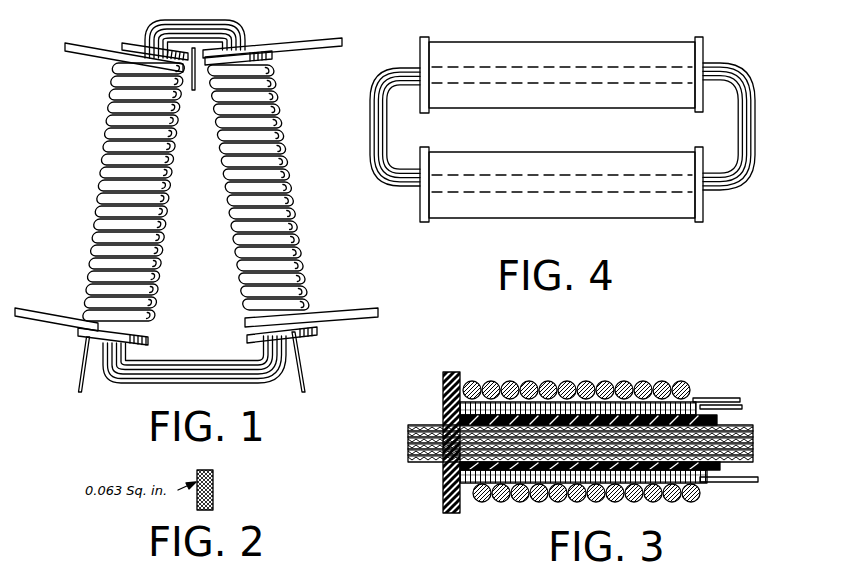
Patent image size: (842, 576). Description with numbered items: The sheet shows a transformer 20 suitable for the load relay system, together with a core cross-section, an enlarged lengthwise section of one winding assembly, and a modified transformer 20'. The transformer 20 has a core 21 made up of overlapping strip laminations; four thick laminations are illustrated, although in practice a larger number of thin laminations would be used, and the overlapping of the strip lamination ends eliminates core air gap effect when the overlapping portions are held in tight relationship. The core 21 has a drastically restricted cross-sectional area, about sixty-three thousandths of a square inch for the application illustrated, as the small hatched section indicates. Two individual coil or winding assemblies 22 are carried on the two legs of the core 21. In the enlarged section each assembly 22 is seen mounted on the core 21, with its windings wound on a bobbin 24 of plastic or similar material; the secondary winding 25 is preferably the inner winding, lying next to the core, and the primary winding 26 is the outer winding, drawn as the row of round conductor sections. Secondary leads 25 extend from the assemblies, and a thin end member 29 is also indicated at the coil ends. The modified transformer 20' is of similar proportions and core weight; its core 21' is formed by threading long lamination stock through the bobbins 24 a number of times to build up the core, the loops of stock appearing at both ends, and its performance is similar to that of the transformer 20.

In FIG. 1, the transformer 20 is at (221, 215).
In FIG. 1, the core 21 is at (190, 211).
In FIG. 2, the core 21 is at (224, 490).
In FIG. 3, the core 21 is at (579, 465).
In FIG. 1, the coil or winding assembly 22 is at (90, 121).
In FIG. 3, the coil or winding assembly 22 is at (645, 362).
In FIG. 4, the coil or winding assembly 22 is at (660, 157).
In FIG. 1, the bobbin 24 is at (78, 333).
In FIG. 3, the bobbin 24 is at (457, 372).
In FIG. 1, the secondary winding 25 is at (317, 385).
In FIG. 3, the secondary winding 25 is at (705, 407).
In FIG. 1, the primary winding 26 is at (100, 208).
In FIG. 3, the primary winding 26 is at (580, 381).
In FIG. 1, the insulating end plate 29 is at (135, 337).
In FIG. 3, the insulating end plate 29 is at (713, 398).
In FIG. 4, the modified transformer 20' is at (562, 129).
In FIG. 4, the core of modified transformer 21' is at (562, 126).